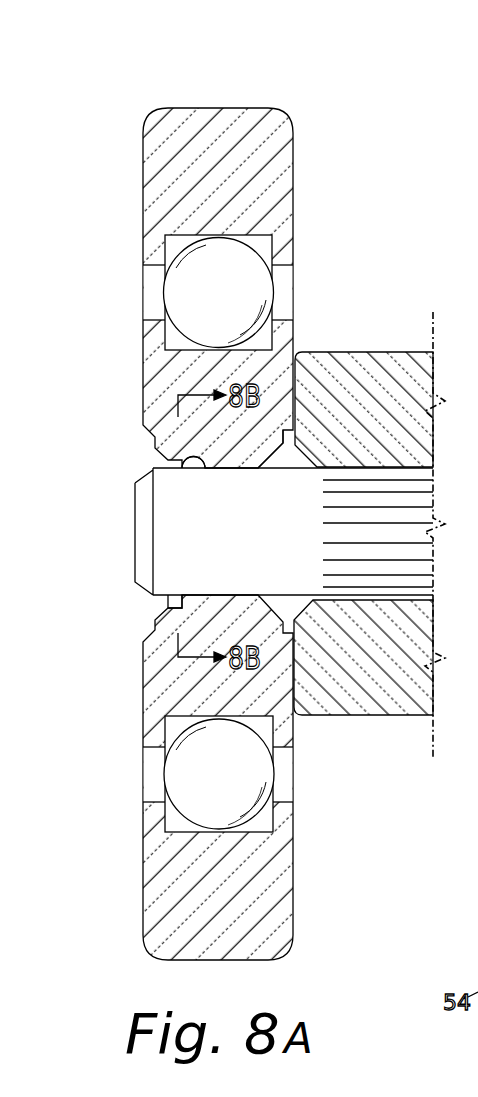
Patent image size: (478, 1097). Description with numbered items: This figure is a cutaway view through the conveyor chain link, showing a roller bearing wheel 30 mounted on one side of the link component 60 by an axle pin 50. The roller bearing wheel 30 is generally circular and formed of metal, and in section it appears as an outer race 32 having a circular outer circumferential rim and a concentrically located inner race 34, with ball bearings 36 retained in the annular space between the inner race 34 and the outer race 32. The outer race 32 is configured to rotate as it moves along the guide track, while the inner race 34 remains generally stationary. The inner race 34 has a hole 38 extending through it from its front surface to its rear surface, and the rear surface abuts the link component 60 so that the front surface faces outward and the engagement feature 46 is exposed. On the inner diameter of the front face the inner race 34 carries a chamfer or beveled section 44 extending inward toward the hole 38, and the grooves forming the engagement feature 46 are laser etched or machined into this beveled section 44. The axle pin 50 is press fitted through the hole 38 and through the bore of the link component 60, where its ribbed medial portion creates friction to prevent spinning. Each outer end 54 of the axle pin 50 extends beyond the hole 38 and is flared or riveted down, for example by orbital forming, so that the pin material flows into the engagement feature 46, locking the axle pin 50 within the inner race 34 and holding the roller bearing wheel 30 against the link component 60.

The roller bearing wheel 30 is at (221, 93).
The outer race 32 is at (267, 150).
The inner race 34 is at (283, 733).
The ball bearings 36 is at (188, 775).
The hole 38 is at (231, 460).
The beveled section 44 is at (165, 608).
The engagement feature 46 is at (204, 471).
The axle pin 50 is at (397, 557).
The outer ends 54 is at (126, 540).
The link component 60 is at (373, 372).